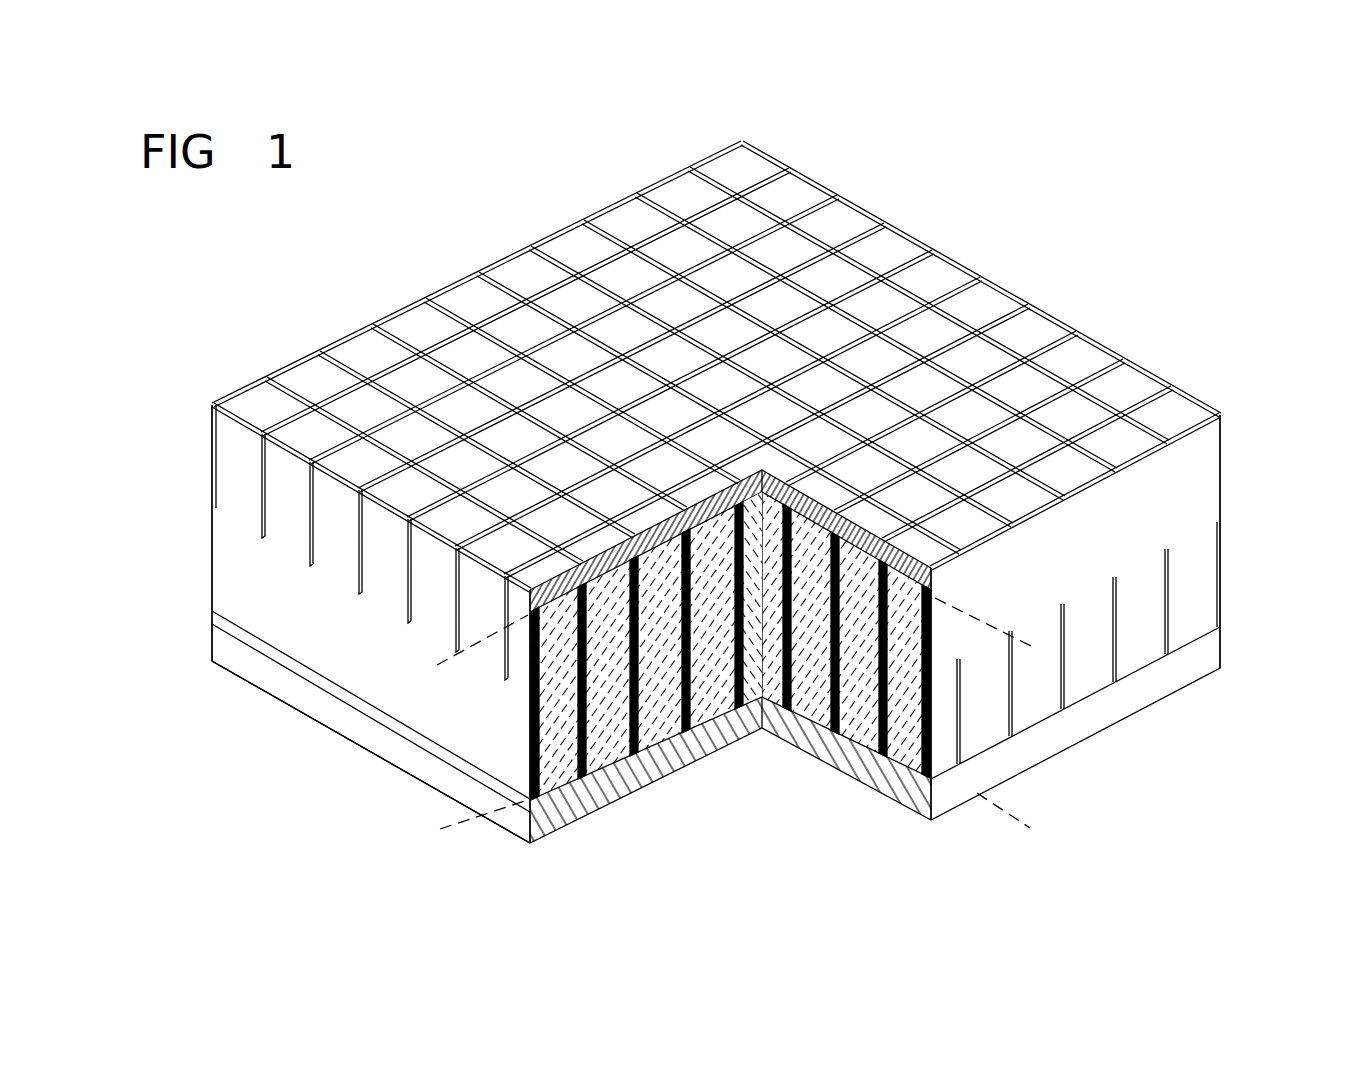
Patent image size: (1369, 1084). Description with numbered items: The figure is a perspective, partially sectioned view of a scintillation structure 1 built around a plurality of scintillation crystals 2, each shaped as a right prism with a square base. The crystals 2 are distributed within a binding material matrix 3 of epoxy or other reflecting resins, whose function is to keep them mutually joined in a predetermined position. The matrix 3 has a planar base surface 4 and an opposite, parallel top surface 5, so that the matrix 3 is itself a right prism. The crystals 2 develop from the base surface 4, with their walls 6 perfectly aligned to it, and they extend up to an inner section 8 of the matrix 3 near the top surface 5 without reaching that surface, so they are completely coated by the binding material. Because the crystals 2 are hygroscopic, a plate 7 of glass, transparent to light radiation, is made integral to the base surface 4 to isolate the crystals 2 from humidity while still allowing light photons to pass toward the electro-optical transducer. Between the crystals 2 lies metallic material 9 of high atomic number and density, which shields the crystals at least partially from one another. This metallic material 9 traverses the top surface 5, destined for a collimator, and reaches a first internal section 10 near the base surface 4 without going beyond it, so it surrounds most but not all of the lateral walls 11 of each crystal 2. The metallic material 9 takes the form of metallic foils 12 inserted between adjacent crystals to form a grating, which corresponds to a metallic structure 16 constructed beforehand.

The scintillation structure 1 is at (1072, 206).
The scintillation crystals 2 is at (548, 750).
The binding material matrix 3 is at (523, 387).
The base surface 4 is at (263, 657).
The top surface 5 is at (1020, 447).
The walls 6 is at (615, 769).
The plate 7 is at (353, 723).
The inner section 8 is at (455, 660).
The metallic material 9 is at (490, 723).
The first internal section 10 is at (453, 833).
The lateral walls 11 is at (933, 683).
The metallic foils 12 is at (713, 346).
The metallic structure 16 is at (403, 362).